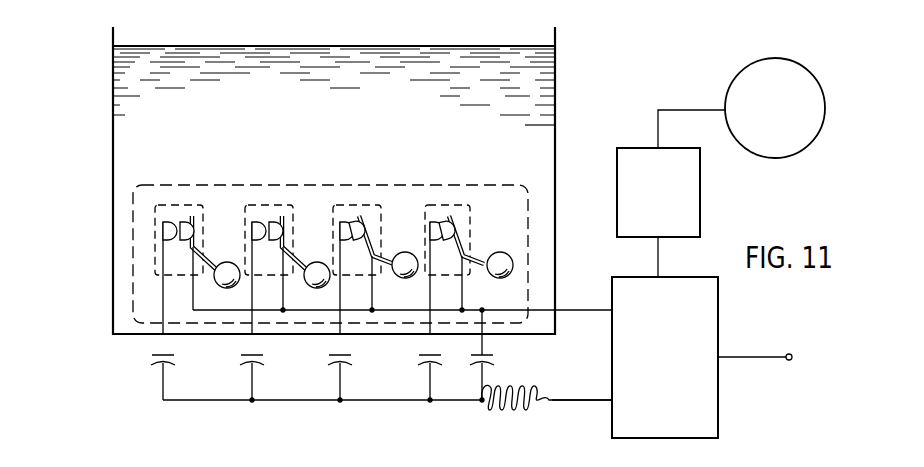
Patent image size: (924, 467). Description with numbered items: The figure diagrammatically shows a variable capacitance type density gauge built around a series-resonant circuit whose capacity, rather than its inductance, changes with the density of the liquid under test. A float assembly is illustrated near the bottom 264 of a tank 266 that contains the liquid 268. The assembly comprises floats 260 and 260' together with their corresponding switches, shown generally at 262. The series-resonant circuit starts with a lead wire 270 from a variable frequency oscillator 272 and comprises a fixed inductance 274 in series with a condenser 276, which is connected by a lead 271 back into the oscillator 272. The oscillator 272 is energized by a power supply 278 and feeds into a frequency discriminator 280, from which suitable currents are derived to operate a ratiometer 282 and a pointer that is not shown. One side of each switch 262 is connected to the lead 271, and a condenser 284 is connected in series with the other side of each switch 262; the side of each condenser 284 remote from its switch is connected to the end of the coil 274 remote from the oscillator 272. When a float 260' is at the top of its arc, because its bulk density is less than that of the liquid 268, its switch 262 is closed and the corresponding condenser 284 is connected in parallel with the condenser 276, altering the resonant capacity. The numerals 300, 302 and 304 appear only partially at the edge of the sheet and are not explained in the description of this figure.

The float 260 is at (246, 275).
The float 260' is at (426, 275).
The switch 262 is at (265, 204).
The bottom 264 is at (548, 337).
The tank 266 is at (556, 108).
The liquid 268 is at (233, 60).
The lead wire 270 is at (588, 402).
The lead 271 is at (583, 309).
The variable frequency oscillator 272 is at (718, 421).
The fixed inductance 274 is at (512, 411).
The condenser 276 is at (496, 356).
The power supply 278 is at (787, 355).
The frequency discriminator 280 is at (700, 205).
The ratiometer 282 is at (818, 86).
The condenser 284 is at (238, 363).
The component (partially shown) 300 is at (601, 460).
The component (partially shown) 302 is at (681, 460).
The component (partially shown) 304 is at (521, 460).